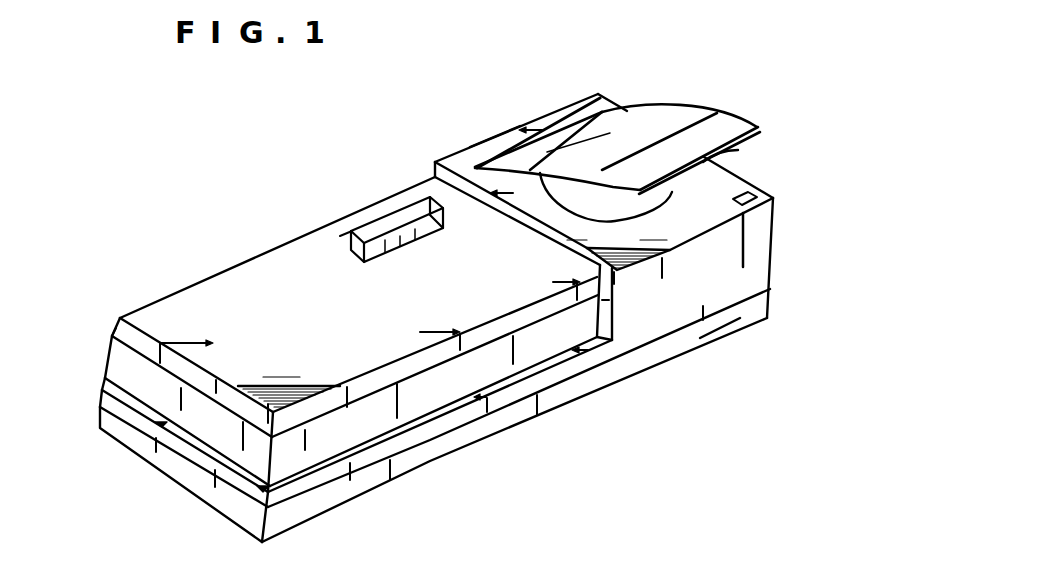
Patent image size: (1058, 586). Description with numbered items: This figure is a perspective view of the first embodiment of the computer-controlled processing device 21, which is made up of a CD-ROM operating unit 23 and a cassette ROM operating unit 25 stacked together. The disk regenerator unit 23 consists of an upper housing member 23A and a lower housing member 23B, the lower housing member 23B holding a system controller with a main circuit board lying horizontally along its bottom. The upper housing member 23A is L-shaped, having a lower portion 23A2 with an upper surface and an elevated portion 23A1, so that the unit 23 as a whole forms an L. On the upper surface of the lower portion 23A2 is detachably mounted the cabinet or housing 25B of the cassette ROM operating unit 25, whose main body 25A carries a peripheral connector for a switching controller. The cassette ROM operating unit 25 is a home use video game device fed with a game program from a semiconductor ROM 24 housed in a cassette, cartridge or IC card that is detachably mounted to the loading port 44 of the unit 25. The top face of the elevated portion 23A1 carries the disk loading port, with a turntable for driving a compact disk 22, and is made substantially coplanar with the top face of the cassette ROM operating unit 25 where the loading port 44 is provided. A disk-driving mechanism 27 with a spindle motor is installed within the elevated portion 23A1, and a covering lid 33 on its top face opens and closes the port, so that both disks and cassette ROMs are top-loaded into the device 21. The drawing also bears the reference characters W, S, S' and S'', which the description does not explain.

The computer-controlled processing device 21 is at (447, 152).
The compact disk 22 is at (715, 165).
The CD-ROM operating unit 23 is at (774, 256).
The upper housing member 23A is at (755, 281).
The elevated portion 23A1 is at (757, 222).
The lower portion 23A2 is at (508, 397).
The lower housing member 23B is at (622, 367).
The semiconductor ROM 24 is at (428, 217).
The cassette ROM operating unit 25 is at (273, 249).
The main body 25A is at (233, 297).
The cabinet 25B is at (158, 297).
The disk-driving mechanism 27 is at (752, 181).
The covering lid 33 is at (662, 123).
The loading port 44 is at (348, 246).
The gap width W is at (612, 323).
The parting line S is at (519, 403).
The surface S' is at (537, 83).
The surface S'' is at (91, 329).